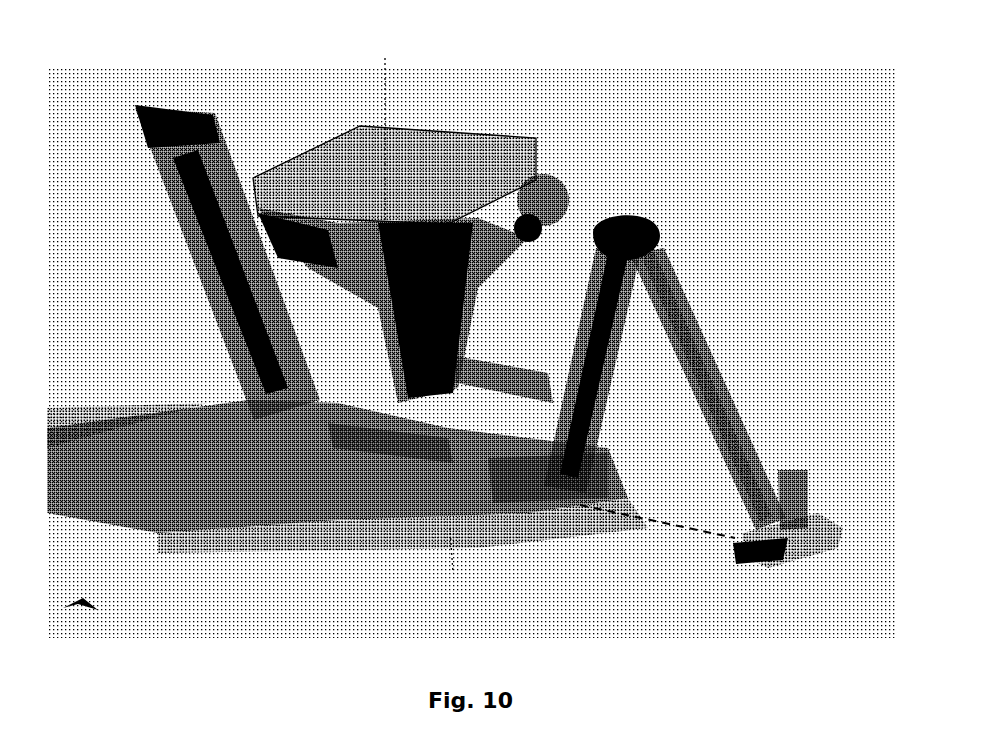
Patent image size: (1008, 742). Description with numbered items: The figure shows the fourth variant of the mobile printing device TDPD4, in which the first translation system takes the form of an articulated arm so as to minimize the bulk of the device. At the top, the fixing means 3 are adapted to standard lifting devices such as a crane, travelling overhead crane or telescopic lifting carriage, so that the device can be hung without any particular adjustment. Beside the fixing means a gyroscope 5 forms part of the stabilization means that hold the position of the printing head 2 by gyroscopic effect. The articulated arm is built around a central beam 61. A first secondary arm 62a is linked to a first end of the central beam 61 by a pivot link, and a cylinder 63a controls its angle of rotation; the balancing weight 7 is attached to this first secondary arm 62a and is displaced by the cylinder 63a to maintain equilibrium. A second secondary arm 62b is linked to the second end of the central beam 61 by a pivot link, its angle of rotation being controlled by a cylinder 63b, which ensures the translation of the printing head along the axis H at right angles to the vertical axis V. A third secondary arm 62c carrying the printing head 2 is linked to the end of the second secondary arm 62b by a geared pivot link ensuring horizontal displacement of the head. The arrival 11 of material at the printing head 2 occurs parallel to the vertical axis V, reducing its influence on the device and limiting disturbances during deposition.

The printing device TDPD4 is at (170, 48).
The balancing weight 7 is at (145, 123).
The vertical axis V is at (378, 65).
The fixing means 3 is at (445, 105).
The gyroscope 5 is at (540, 178).
The first secondary arm 62a is at (185, 235).
The second secondary arm 62b is at (608, 377).
The third secondary arm 62c is at (683, 305).
The cylinder 63a is at (455, 360).
The cylinder 63b is at (387, 435).
The central beam 61 is at (500, 467).
The arrival of material 11 is at (780, 448).
The printing head 2 is at (826, 515).
The axis H is at (592, 553).